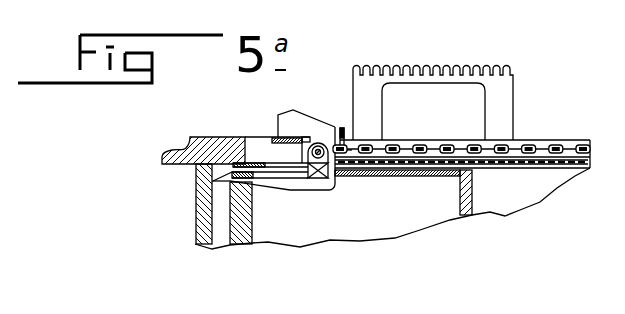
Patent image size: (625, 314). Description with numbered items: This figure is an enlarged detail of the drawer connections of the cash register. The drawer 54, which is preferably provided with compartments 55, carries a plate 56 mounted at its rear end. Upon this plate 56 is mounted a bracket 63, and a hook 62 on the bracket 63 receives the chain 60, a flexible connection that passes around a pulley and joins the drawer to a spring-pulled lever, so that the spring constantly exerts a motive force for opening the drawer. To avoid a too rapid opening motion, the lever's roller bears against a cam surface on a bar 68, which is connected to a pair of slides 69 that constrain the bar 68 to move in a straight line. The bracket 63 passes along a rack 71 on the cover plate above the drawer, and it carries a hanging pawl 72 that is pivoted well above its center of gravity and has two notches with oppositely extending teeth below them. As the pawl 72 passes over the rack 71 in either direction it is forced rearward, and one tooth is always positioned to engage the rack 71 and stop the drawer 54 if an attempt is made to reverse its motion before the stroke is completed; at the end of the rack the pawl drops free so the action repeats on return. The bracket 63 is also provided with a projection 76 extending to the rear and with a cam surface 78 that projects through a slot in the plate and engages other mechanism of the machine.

The drawer 54 is at (247, 245).
The compartments 55 is at (485, 212).
The plate 56 is at (400, 177).
The chain 60 is at (535, 143).
The hook 62 is at (340, 127).
The bracket 63 is at (330, 192).
The bar 68 is at (275, 137).
The slides 69 is at (402, 66).
The rack 71 is at (532, 167).
The hanging pawl 72 is at (316, 180).
The projection 76 is at (267, 182).
The cam surface 78 is at (301, 111).